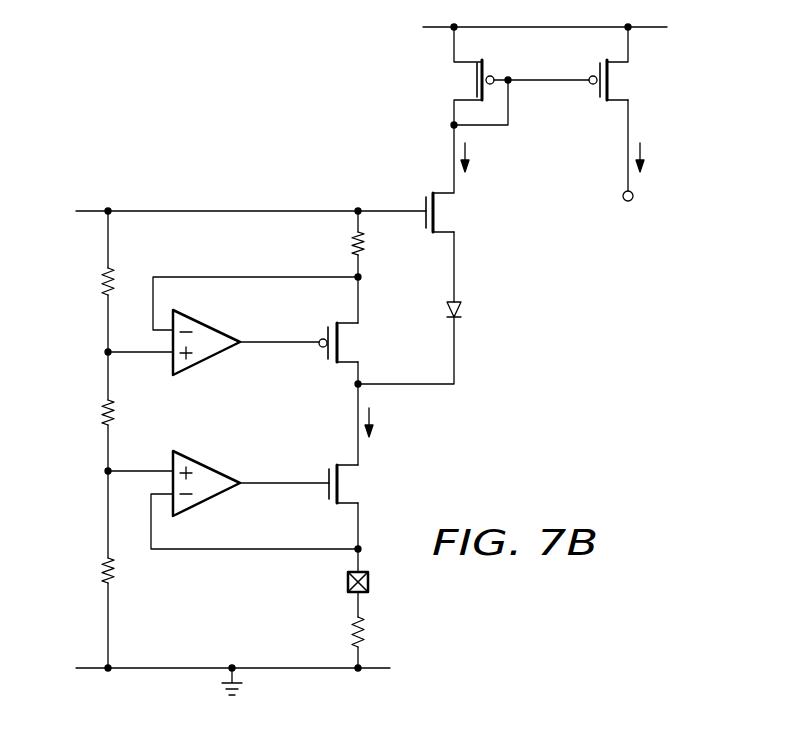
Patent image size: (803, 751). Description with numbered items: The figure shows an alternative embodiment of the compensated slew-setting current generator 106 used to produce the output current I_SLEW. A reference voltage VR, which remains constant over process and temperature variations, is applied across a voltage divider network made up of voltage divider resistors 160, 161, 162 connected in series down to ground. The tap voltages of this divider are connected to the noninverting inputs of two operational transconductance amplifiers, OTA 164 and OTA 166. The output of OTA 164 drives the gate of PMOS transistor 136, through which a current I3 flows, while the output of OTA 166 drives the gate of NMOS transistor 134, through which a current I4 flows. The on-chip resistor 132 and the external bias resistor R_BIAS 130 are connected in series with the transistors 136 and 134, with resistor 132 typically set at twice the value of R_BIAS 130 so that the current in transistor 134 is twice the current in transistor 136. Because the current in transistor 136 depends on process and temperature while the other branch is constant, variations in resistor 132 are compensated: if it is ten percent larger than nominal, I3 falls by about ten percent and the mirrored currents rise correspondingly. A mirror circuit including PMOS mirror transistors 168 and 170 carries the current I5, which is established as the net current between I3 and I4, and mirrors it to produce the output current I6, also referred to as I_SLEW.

The compensated slew-setting current generator 106 is at (211, 117).
The bias resistor R_BIAS 130 is at (352, 631).
The on-chip resistor 132 is at (352, 252).
The NMOS transistor 134 is at (330, 497).
The PMOS transistor 136 is at (329, 357).
The voltage divider resistor 160 is at (103, 282).
The voltage divider resistor 161 is at (102, 410).
The voltage divider resistor 162 is at (103, 567).
The OTA 164 is at (204, 360).
The OTA 166 is at (207, 463).
The PMOS mirror transistor 168 is at (484, 68).
The PMOS mirror transistor 170 is at (595, 96).